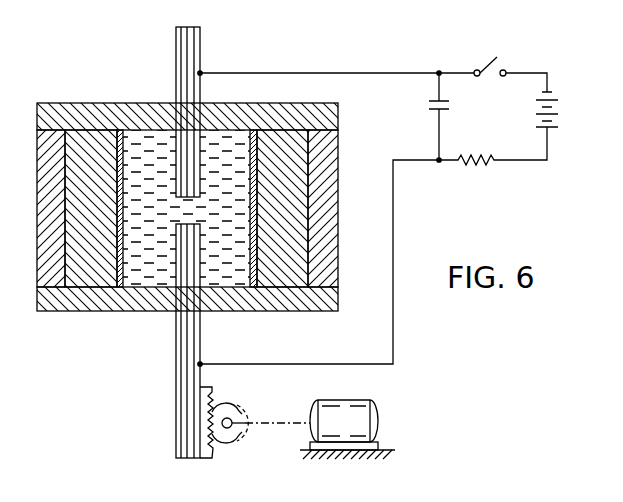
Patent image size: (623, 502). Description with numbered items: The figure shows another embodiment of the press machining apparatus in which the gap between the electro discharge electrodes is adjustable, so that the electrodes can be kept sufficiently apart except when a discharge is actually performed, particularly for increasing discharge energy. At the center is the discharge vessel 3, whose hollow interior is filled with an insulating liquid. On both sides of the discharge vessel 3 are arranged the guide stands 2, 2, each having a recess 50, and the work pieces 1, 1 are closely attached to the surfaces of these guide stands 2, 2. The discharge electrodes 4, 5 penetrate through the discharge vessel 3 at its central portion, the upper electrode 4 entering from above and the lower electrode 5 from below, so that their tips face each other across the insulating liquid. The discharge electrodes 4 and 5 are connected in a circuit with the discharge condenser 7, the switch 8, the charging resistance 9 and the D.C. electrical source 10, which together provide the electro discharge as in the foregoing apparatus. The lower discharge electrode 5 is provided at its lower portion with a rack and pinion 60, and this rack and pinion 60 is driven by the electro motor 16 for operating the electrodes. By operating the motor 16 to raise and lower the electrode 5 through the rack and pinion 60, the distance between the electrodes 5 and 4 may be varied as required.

The work piece 1 is at (123, 197).
The guide stand 2 is at (81, 281).
The discharge vessel 3 is at (340, 110).
The discharge electrode 4 is at (200, 170).
The discharge electrode 5 is at (200, 241).
The discharge condenser 7 is at (423, 112).
The switch 8 is at (493, 68).
The charging resistance 9 is at (480, 165).
The D.C. electrical source 10 is at (558, 120).
The electro motor 16 is at (378, 415).
The recess 50 is at (117, 190).
The rack and pinion 60 is at (213, 450).